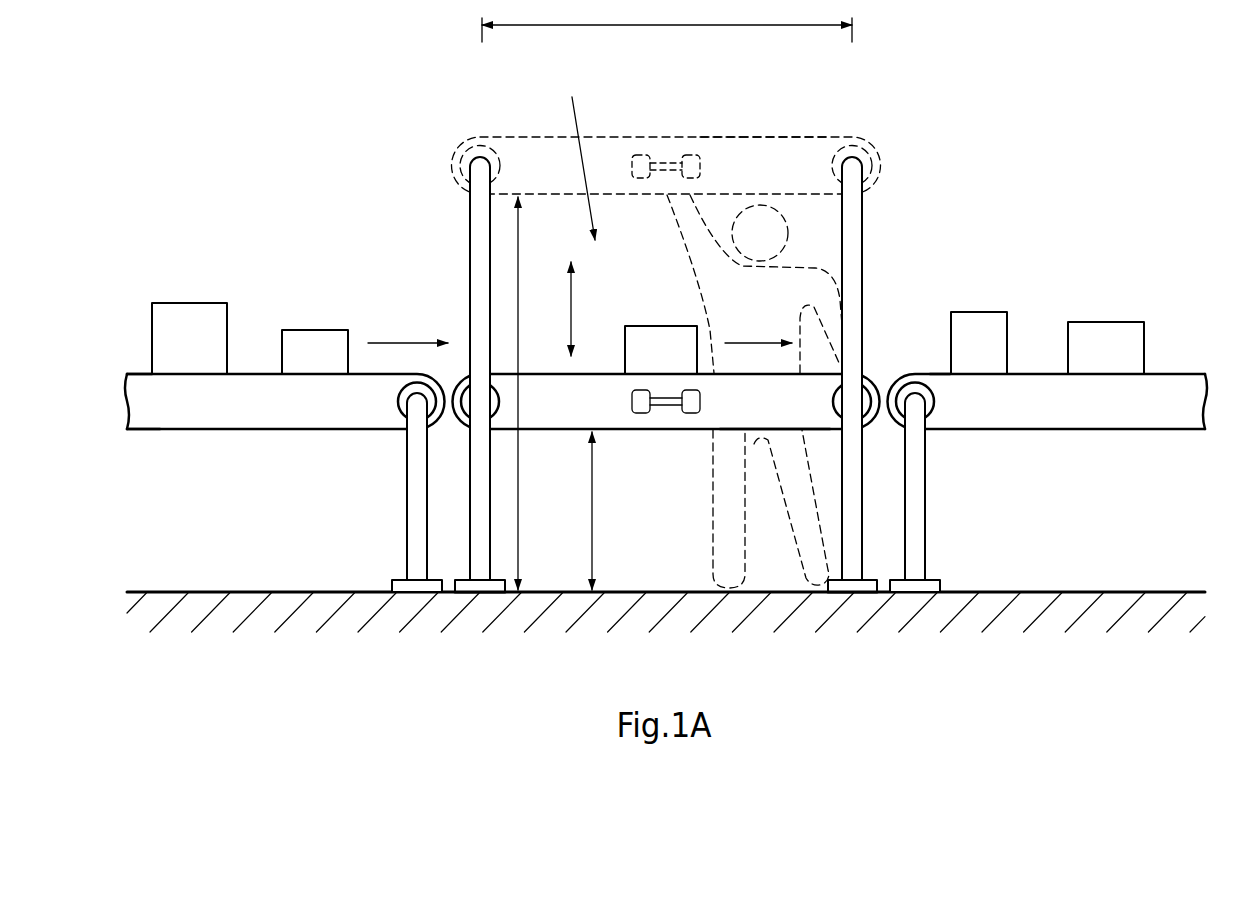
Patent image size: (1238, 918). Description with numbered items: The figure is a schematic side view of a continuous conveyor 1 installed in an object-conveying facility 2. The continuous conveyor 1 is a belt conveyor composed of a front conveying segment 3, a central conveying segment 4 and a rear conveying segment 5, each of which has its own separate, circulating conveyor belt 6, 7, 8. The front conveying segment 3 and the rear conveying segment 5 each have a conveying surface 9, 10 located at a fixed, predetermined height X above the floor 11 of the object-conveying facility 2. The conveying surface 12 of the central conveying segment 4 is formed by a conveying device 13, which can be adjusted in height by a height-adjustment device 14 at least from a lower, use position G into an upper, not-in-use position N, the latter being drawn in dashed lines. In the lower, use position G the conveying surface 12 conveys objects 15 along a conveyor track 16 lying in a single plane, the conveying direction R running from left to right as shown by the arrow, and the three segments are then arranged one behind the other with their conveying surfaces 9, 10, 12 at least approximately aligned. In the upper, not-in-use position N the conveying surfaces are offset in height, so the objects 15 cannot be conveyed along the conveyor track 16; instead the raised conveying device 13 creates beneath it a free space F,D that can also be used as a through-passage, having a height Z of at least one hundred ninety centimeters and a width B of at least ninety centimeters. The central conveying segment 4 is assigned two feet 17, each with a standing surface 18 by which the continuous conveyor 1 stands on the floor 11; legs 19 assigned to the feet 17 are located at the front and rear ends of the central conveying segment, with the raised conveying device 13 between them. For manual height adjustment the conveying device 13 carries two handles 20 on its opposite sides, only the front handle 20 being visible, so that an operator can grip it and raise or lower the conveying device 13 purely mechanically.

The continuous conveyor 1 is at (318, 165).
The object-conveying facility 2 is at (1088, 112).
The front conveying segment 3 is at (284, 421).
The central conveying segment 4 is at (673, 505).
The rear conveying segment 5 is at (1048, 420).
The conveyor belt 6 is at (268, 372).
The conveyor belt 7 is at (638, 137).
The conveyor belt 8 is at (1180, 372).
The conveying surface 9 is at (140, 368).
The conveying surface 10 is at (938, 368).
The floor 11 is at (253, 590).
The conveying surface 12 is at (537, 133).
The conveying device 13 is at (803, 150).
The height-adjustment device 14 is at (862, 230).
The objects 15 is at (190, 312).
The conveyor track 16 is at (758, 327).
The feet 17 is at (468, 587).
The standing surface 18 is at (490, 592).
The legs 19 is at (665, 368).
The handles 20 is at (670, 162).
The width B is at (667, 21).
The conveying direction R is at (408, 329).
The upper, not-in-use position N is at (757, 165).
The lower, use position G is at (760, 402).
The height Z is at (518, 467).
The height X is at (592, 510).
The free space / through-passage F,D is at (570, 209).